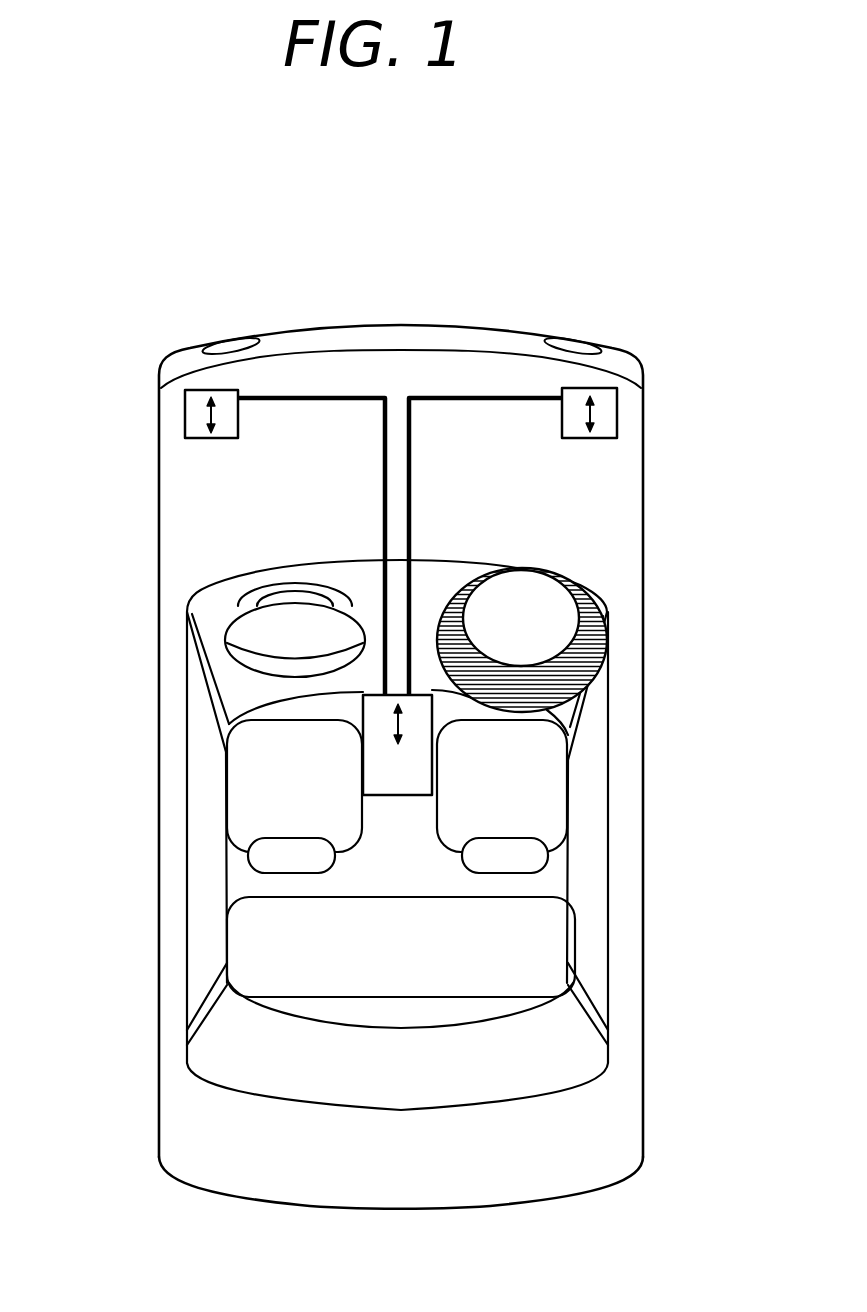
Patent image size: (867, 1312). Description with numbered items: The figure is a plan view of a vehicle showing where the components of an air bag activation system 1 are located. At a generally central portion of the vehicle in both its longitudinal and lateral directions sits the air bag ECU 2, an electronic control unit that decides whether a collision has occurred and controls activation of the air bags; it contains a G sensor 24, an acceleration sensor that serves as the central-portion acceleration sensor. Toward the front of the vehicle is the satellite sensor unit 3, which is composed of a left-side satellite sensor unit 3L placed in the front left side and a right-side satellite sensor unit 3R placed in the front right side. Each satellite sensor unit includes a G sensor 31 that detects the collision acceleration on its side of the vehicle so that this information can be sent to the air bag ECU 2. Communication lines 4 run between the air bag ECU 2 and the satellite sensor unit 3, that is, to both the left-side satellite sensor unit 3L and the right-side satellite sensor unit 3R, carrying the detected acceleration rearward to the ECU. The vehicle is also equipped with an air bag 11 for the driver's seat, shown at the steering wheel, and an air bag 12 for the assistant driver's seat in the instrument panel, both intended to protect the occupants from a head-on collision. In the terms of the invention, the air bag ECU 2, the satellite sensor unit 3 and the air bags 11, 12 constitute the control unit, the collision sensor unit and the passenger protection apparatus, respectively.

The air bag activation system 1 is at (541, 214).
The air bag ECU 2 is at (420, 767).
The satellite sensor unit 3 is at (487, 233).
The left-side satellite sensor unit 3L is at (225, 390).
The right-side satellite sensor unit 3R is at (580, 388).
The communication lines 4 is at (409, 513).
The air bag for driver's seat 11 is at (545, 587).
The air bag for assistant driver's seat 12 is at (285, 612).
The G sensor 24 is at (397, 725).
The G sensor 31 is at (207, 412).